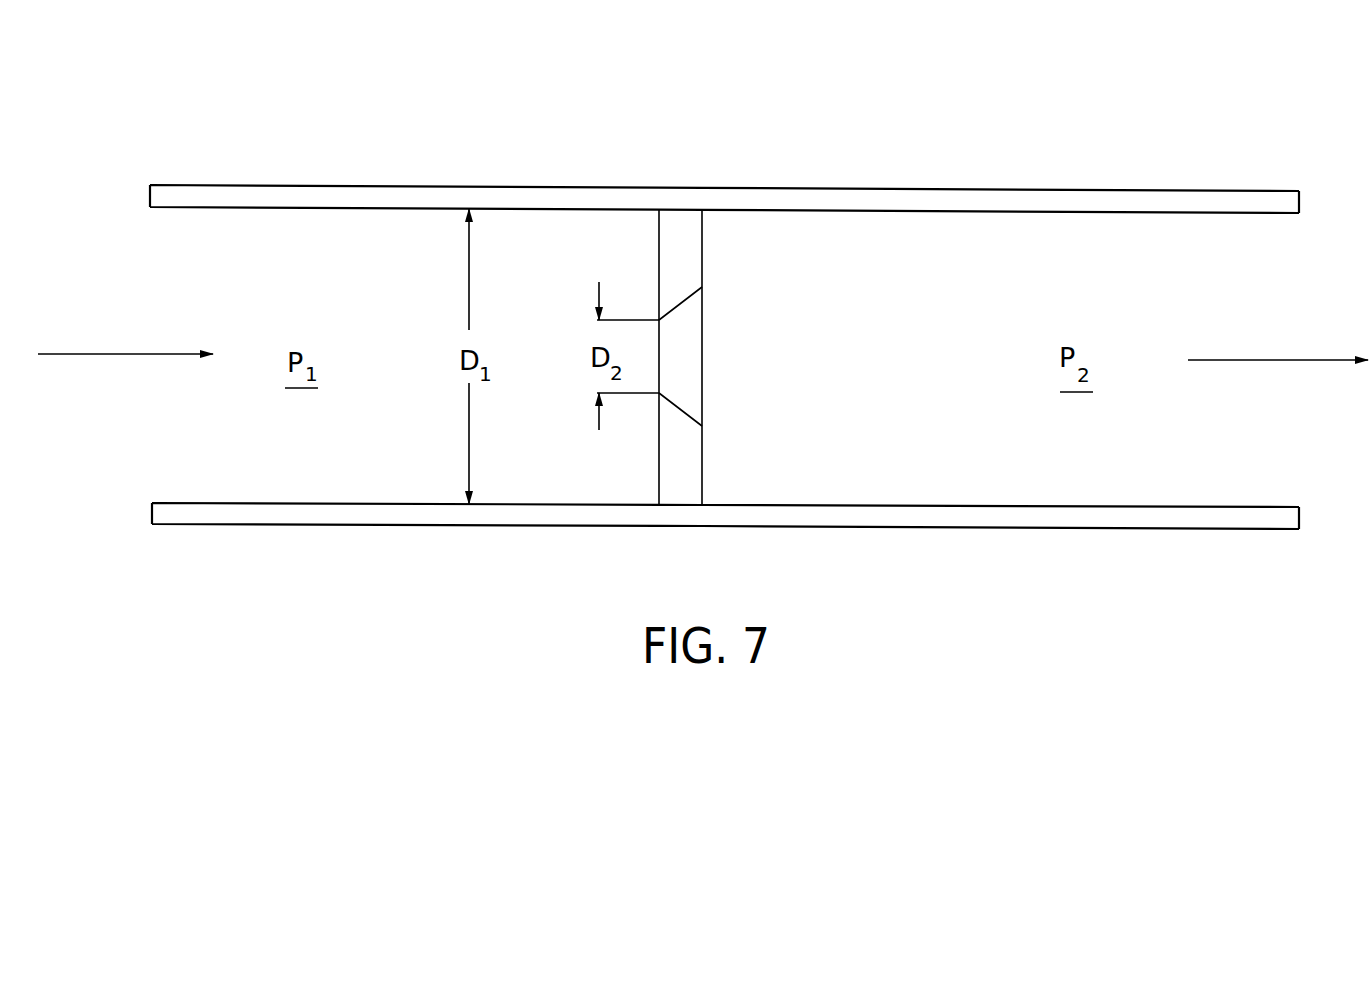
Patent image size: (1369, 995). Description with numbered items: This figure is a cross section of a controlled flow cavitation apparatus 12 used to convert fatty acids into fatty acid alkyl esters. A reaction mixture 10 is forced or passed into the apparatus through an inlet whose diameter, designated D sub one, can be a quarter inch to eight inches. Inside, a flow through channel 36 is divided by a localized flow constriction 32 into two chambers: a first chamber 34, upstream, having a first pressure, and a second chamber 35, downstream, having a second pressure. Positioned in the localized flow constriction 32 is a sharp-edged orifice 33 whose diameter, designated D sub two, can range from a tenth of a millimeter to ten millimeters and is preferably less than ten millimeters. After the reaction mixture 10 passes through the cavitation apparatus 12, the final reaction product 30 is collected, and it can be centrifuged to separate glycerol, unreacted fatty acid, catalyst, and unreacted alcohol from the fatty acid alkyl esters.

The reaction mixture 10 is at (78, 356).
The controlled flow cavitation apparatus 12 is at (725, 264).
The reaction product 30 is at (1268, 362).
The localized flow constriction 32 is at (696, 251).
The sharp-edged orifice 33 is at (683, 360).
The first chamber 34 is at (279, 229).
The second chamber 35 is at (940, 231).
The flow through channel 36 is at (444, 196).